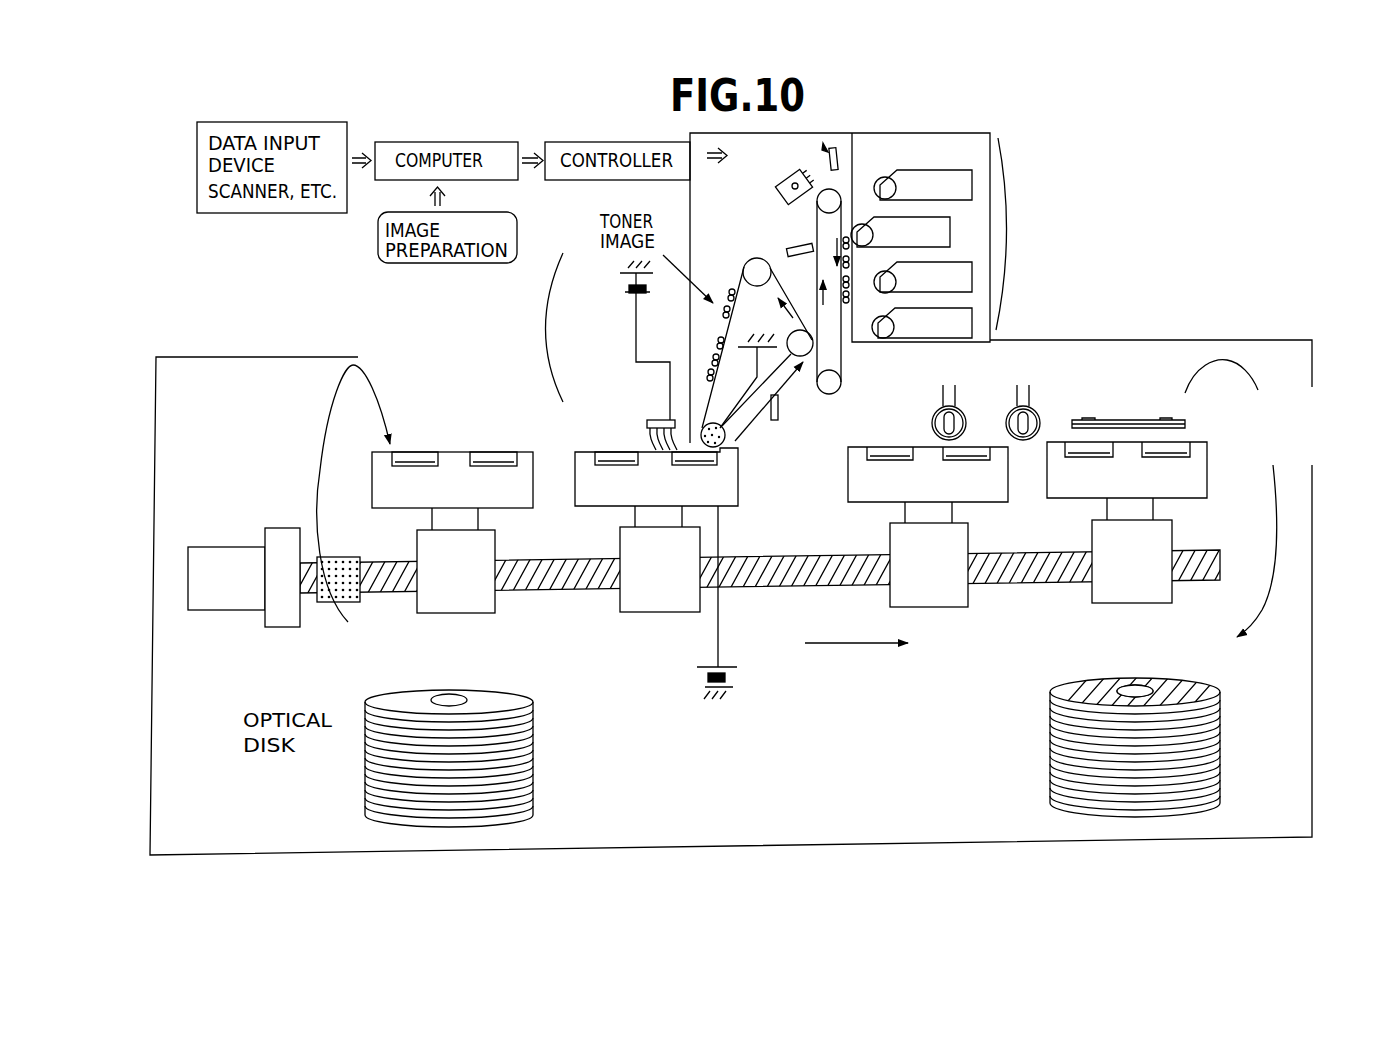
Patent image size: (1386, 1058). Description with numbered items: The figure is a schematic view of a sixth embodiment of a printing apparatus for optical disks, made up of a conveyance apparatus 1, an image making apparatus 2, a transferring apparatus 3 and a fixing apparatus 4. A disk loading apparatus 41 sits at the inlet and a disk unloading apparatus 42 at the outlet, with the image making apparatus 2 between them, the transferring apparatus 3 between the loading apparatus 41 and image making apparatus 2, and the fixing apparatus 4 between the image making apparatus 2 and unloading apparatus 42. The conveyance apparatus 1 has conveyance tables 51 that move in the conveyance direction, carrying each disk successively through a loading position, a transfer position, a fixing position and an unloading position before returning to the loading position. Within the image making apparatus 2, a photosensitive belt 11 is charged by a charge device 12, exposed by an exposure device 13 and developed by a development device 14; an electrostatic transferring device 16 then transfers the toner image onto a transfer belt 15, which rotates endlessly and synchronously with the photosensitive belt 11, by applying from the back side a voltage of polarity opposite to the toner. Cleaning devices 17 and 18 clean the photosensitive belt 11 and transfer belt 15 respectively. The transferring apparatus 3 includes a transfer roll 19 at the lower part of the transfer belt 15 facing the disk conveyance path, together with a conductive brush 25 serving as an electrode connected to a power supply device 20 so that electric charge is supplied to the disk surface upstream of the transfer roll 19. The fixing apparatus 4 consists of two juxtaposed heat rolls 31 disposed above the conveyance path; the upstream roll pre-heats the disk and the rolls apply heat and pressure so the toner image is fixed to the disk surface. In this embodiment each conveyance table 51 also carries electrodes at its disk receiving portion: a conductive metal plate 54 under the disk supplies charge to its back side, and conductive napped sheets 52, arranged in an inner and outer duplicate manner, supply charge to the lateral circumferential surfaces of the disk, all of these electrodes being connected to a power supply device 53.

The conveyance apparatus 1 is at (711, 611).
The image making apparatus 2 is at (933, 288).
The transferring apparatus 3 is at (519, 351).
The fixing apparatus 4 is at (1027, 375).
The photosensitive belt 11 is at (845, 353).
The charge device 12 is at (775, 177).
The exposure device 13 is at (827, 138).
The development device 14 is at (923, 168).
The transfer belt 15 is at (736, 279).
The electrostatic transferring device 16 is at (801, 362).
The cleaning device 17 is at (790, 240).
The cleaning device 18 is at (785, 418).
The transfer roll 19 is at (730, 441).
The power supply device 20 is at (618, 285).
The conductive brush 25 is at (648, 408).
The heat rolls 31 is at (973, 408).
The disk loading apparatus 41 is at (346, 493).
The disk unloading apparatus 42 is at (1211, 498).
The conveyance table 51 is at (618, 512).
The conductive napped sheets 52 is at (740, 455).
The power supply device 53 is at (727, 676).
The conductive metal plate 54 is at (612, 466).